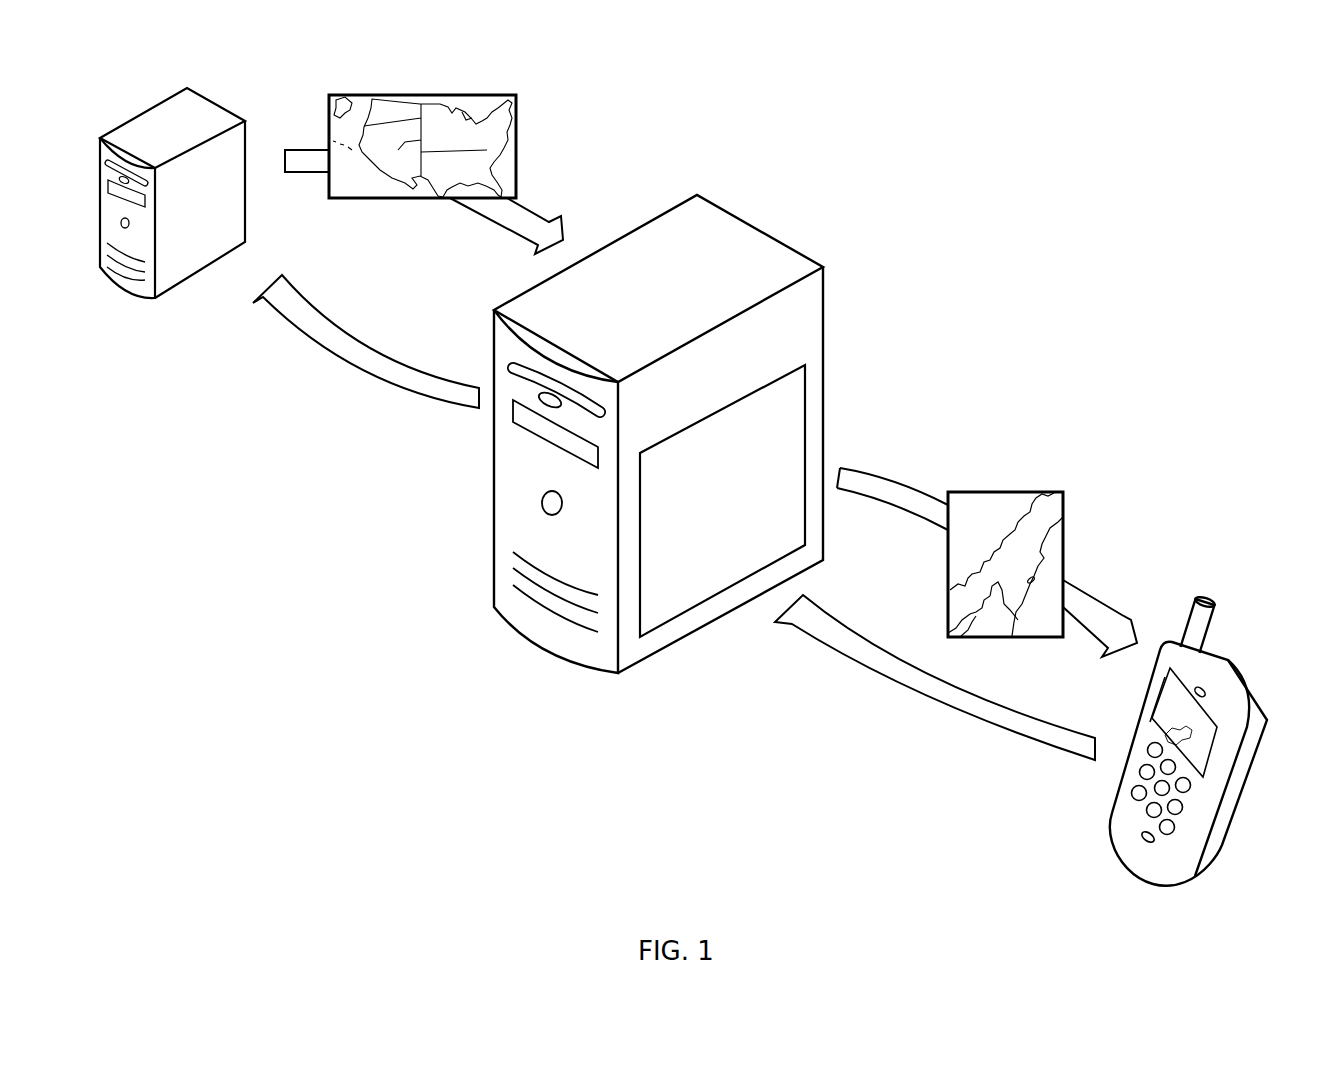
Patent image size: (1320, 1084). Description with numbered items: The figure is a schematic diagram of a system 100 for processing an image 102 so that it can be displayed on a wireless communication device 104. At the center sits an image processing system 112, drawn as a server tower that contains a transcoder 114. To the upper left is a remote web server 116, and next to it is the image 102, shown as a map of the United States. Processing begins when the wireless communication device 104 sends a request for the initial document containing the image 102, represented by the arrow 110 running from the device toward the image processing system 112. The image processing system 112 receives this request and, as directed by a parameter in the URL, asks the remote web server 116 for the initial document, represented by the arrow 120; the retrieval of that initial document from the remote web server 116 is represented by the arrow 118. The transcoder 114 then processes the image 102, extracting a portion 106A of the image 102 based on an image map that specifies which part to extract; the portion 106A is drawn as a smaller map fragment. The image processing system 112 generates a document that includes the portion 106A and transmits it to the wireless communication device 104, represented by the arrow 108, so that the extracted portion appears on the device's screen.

The system 100 is at (403, 688).
The image 102 is at (516, 142).
The wireless communication device 104 is at (1232, 667).
The portion of the image 106A is at (1063, 569).
The arrow 108 is at (890, 478).
The arrow 110 is at (905, 715).
The image processing system 112 is at (760, 228).
The transcoder 114 is at (718, 410).
The remote web server 116 is at (217, 102).
The arrow 118 is at (510, 203).
The arrow 120 is at (355, 378).